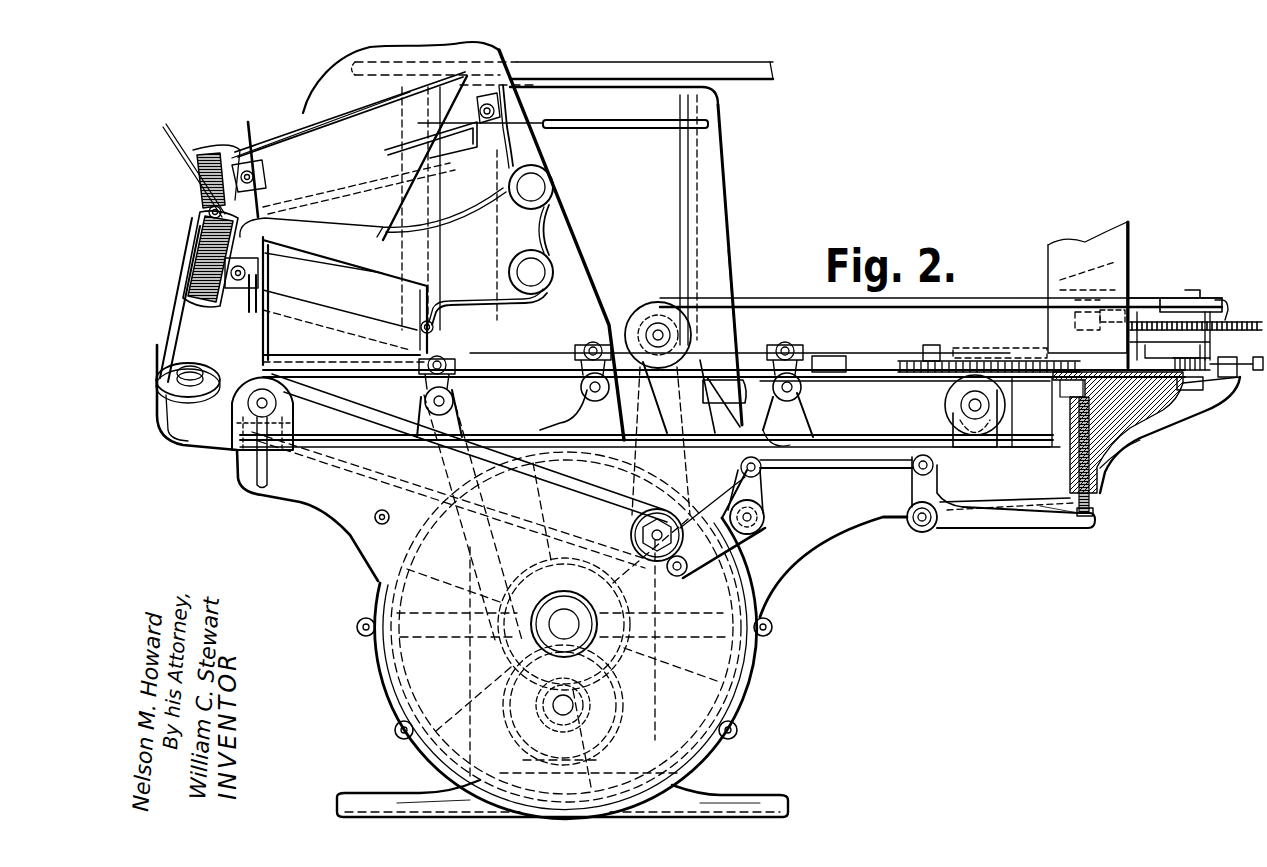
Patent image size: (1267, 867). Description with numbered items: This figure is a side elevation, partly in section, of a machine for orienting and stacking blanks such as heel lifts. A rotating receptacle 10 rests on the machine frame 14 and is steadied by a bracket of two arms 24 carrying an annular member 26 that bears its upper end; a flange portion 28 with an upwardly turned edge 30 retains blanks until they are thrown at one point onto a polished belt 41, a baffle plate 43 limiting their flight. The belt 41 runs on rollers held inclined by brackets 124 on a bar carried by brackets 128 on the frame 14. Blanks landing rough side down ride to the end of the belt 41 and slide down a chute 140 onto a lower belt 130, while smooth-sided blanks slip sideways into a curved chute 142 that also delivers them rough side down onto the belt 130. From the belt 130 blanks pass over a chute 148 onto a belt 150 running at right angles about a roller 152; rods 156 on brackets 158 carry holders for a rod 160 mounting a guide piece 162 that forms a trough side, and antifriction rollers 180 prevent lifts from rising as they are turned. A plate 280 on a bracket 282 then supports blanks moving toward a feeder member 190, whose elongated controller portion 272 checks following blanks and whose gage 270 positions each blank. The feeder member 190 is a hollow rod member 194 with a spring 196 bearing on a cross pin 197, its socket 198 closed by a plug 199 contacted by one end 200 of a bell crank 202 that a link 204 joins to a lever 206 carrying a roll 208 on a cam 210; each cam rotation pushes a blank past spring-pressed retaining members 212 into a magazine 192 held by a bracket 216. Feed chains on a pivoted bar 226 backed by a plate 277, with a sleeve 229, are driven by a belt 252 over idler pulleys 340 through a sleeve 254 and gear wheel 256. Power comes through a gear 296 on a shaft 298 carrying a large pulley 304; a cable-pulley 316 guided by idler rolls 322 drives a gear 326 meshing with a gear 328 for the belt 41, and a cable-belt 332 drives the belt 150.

The receptacle 10 is at (662, 160).
The machine frame 14 is at (878, 522).
The arms 24 is at (728, 212).
The annular member 26 is at (632, 125).
The flange portion 28 is at (768, 82).
The upwardly turned edge 30 is at (776, 70).
The belt 41 is at (315, 133).
The baffle plate 43 is at (330, 97).
The brackets 124 is at (497, 153).
The brackets 128 is at (570, 248).
The second carrier or belt 130 is at (256, 310).
The chute 140 is at (248, 128).
The chute 142 is at (165, 128).
The chute 148 is at (278, 339).
The belt 150 is at (330, 470).
The roller 152 is at (1030, 377).
The rods 156 is at (1017, 407).
The brackets 158 is at (785, 420).
The rod 160 is at (840, 356).
The guide piece 162 is at (552, 360).
The antifriction rollers 180 is at (598, 340).
The feeder member 190 is at (1160, 430).
The magazine 192 is at (1110, 245).
The hollow rod member 194 is at (1100, 465).
The spring 196 is at (1100, 492).
The cross pin 197 is at (1135, 445).
The socket 198 is at (1070, 470).
The plug 199 is at (1096, 512).
The end of bell crank 200 is at (1070, 530).
The bell crank 202 is at (955, 530).
The link 204 is at (872, 462).
The lever 206 is at (765, 503).
The roll 208 is at (690, 575).
The cam 210 is at (682, 528).
The retaining members 212 is at (1140, 350).
The bracket 216 is at (1130, 300).
The bar 226 is at (960, 340).
The sleeve 229 is at (1185, 352).
The belt 252 is at (958, 300).
The sleeve 254 is at (1215, 300).
The gear wheel 256 is at (1240, 320).
The gage 270 is at (1195, 400).
The controller portion 272 is at (1052, 385).
The plate 277 is at (990, 350).
The plate 280 is at (990, 398).
The bracket 282 is at (1012, 440).
The gear 296 is at (712, 760).
The shaft 298 is at (560, 626).
The large pulley 304 is at (748, 655).
The cable-pulley 316 is at (178, 332).
The idler rolls 322 is at (178, 440).
The gear 326 is at (207, 250).
The gear 328 is at (205, 178).
The cable-belt 332 is at (368, 412).
The idler pulleys 340 is at (650, 303).